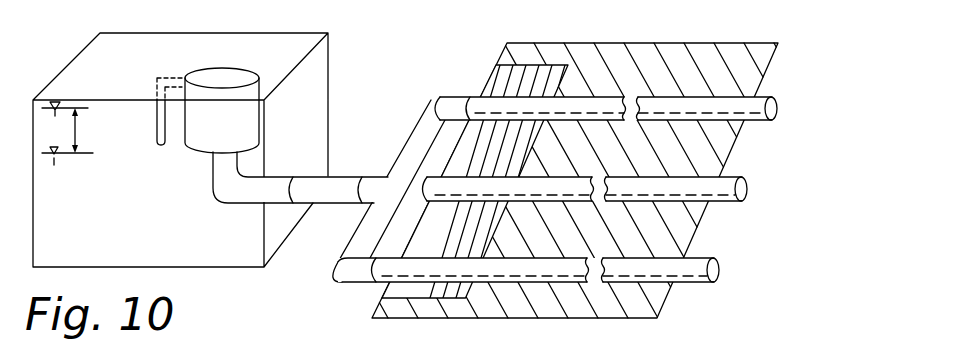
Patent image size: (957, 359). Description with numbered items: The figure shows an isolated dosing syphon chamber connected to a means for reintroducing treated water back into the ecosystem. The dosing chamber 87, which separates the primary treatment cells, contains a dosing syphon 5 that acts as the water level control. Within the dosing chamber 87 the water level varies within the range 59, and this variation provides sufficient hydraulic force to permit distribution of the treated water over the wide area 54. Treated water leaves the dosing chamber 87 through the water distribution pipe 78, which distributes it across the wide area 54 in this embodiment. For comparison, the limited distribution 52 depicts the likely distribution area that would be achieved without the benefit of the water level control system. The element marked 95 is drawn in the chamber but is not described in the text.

The dosing syphon 5 is at (227, 67).
The limited distribution 52 is at (482, 82).
The wide area 54 is at (552, 40).
The range 59 is at (78, 133).
The water distribution pipe 78 is at (717, 257).
The dosing chamber 87 is at (296, 33).
The overflow tube 95 is at (173, 78).